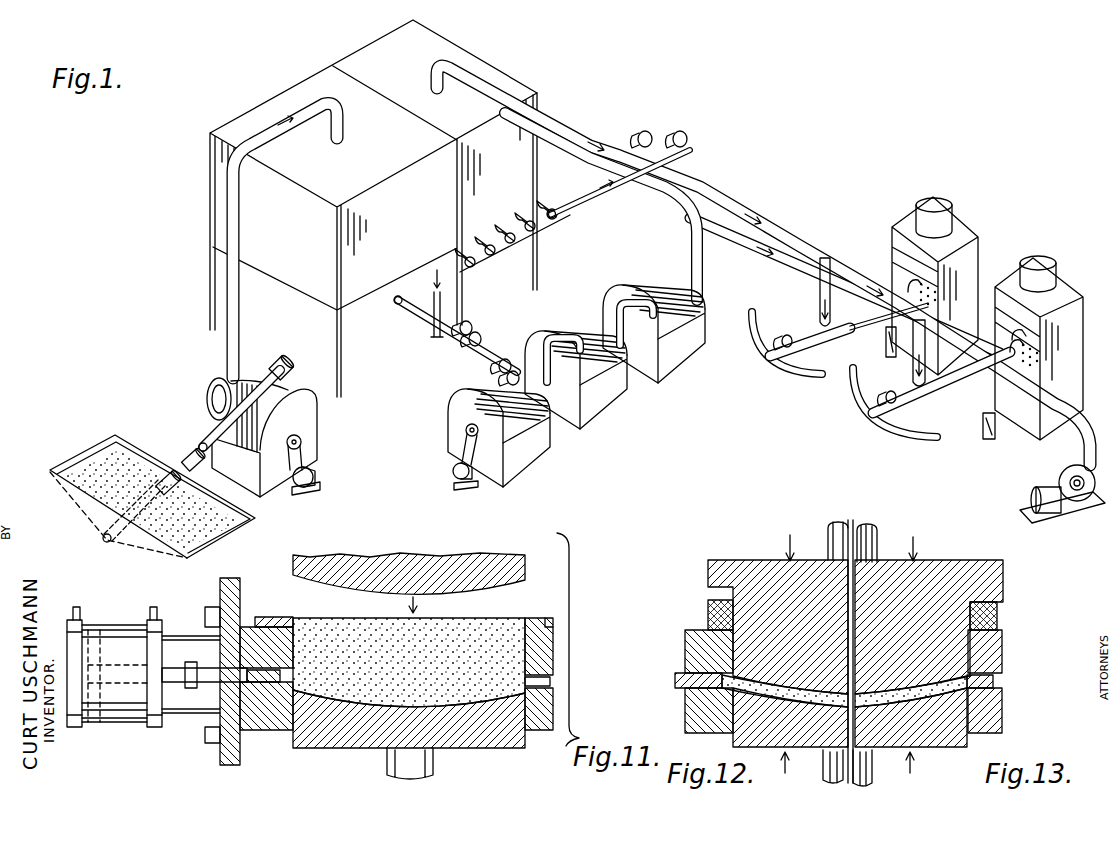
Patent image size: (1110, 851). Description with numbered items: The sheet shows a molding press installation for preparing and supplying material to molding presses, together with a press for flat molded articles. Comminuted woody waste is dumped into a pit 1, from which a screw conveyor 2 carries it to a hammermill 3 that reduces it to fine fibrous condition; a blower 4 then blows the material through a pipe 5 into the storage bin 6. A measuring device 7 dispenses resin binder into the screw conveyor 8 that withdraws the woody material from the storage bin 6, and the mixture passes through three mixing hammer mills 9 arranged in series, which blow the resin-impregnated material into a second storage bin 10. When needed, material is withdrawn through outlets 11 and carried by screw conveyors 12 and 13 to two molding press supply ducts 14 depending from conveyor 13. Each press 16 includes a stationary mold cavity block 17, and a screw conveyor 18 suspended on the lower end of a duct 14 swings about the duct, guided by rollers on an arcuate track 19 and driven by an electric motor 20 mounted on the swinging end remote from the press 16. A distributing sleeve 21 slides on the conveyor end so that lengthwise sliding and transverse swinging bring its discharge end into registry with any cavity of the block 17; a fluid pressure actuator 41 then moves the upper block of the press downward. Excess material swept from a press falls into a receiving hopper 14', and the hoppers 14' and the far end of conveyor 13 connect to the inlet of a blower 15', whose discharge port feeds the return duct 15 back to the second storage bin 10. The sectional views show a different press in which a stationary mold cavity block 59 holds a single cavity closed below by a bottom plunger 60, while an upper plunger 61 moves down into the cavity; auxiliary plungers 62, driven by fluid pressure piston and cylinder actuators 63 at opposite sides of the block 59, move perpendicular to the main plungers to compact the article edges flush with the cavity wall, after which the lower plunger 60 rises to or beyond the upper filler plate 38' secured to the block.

In FIG. 1, the pit 1 is at (233, 527).
In FIG. 1, the screw conveyor 2 is at (192, 460).
In FIG. 1, the hammermill 3 is at (307, 423).
In FIG. 1, the blower 4 is at (206, 393).
In FIG. 1, the pipe 5 is at (240, 315).
In FIG. 1, the storage bin 6 is at (398, 225).
In FIG. 1, the measuring device 7 is at (432, 337).
In FIG. 1, the screw conveyor 8 is at (399, 312).
In FIG. 1, the mixing hammer mills 9 is at (538, 463).
In FIG. 1, the second storage bin 10 is at (511, 163).
In FIG. 1, the outlets 11 is at (482, 226).
In FIG. 1, the screw conveyor 12 is at (588, 201).
In FIG. 1, the screw conveyor 13 is at (702, 179).
In FIG. 1, the molding press supply ducts 14 is at (875, 322).
In FIG. 1, the receiving hopper 14' is at (923, 393).
In FIG. 1, the return duct 15 is at (849, 329).
In FIG. 1, the blower 15' is at (1049, 494).
In FIG. 1, the press 16 is at (897, 227).
In FIG. 1, the stationary mold cavity block 17 is at (940, 294).
In FIG. 1, the screw conveyor 18 is at (948, 383).
In FIG. 1, the arcuate track 19 is at (800, 378).
In FIG. 1, the electric motor 20 is at (785, 334).
In FIG. 1, the molding material distributing sleeve 21 is at (1042, 334).
In FIG. 1, the fluid pressure piston and cylinder actuator 41 is at (955, 214).
In FIG. 11, the upper filler plate 38' is at (276, 608).
In FIG. 12, the upper filler plate 38' is at (698, 611).
In FIG. 11, the stationary mold cavity block 59 is at (556, 622).
In FIG. 12, the stationary mold cavity block 59 is at (698, 652).
In FIG. 13, the stationary mold cavity block 59 is at (1004, 652).
In FIG. 11, the bottom plunger 60 is at (487, 740).
In FIG. 12, the bottom plunger 60 is at (798, 740).
In FIG. 13, the bottom plunger 60 is at (934, 738).
In FIG. 11, the upper plunger 61 is at (471, 580).
In FIG. 12, the upper plunger 61 is at (757, 567).
In FIG. 13, the upper plunger 61 is at (950, 567).
In FIG. 11, the auxiliary plungers 62 is at (271, 683).
In FIG. 12, the auxiliary plungers 62 is at (675, 683).
In FIG. 13, the auxiliary plungers 62 is at (1040, 683).
In FIG. 11, the fluid pressure piston and cylinder actuators 63 is at (124, 712).